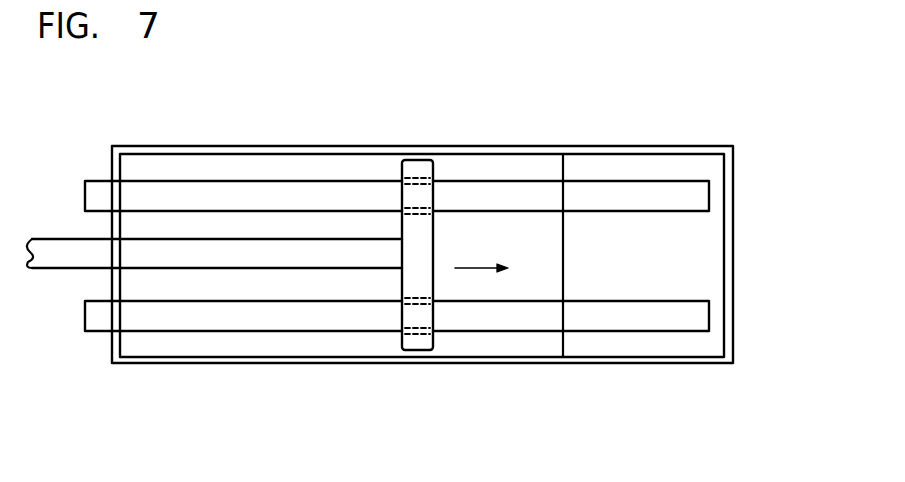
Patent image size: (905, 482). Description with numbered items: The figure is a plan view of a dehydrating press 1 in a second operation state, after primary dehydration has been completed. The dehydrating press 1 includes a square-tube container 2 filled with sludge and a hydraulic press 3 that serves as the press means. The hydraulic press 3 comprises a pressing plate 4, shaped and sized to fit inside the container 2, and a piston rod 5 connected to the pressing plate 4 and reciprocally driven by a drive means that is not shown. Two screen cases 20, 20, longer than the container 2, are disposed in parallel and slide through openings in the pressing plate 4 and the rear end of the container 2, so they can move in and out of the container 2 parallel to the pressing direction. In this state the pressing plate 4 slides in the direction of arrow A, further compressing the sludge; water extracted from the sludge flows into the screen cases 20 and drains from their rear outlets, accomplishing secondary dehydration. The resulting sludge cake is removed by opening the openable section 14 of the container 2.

The dehydrating press 1 is at (456, 118).
The container 2 is at (657, 146).
The hydraulic press 3 is at (452, 245).
The pressing plate 4 is at (416, 167).
The piston rod 5 is at (222, 247).
The openable section 14 is at (696, 252).
The screen case 20 is at (610, 193).